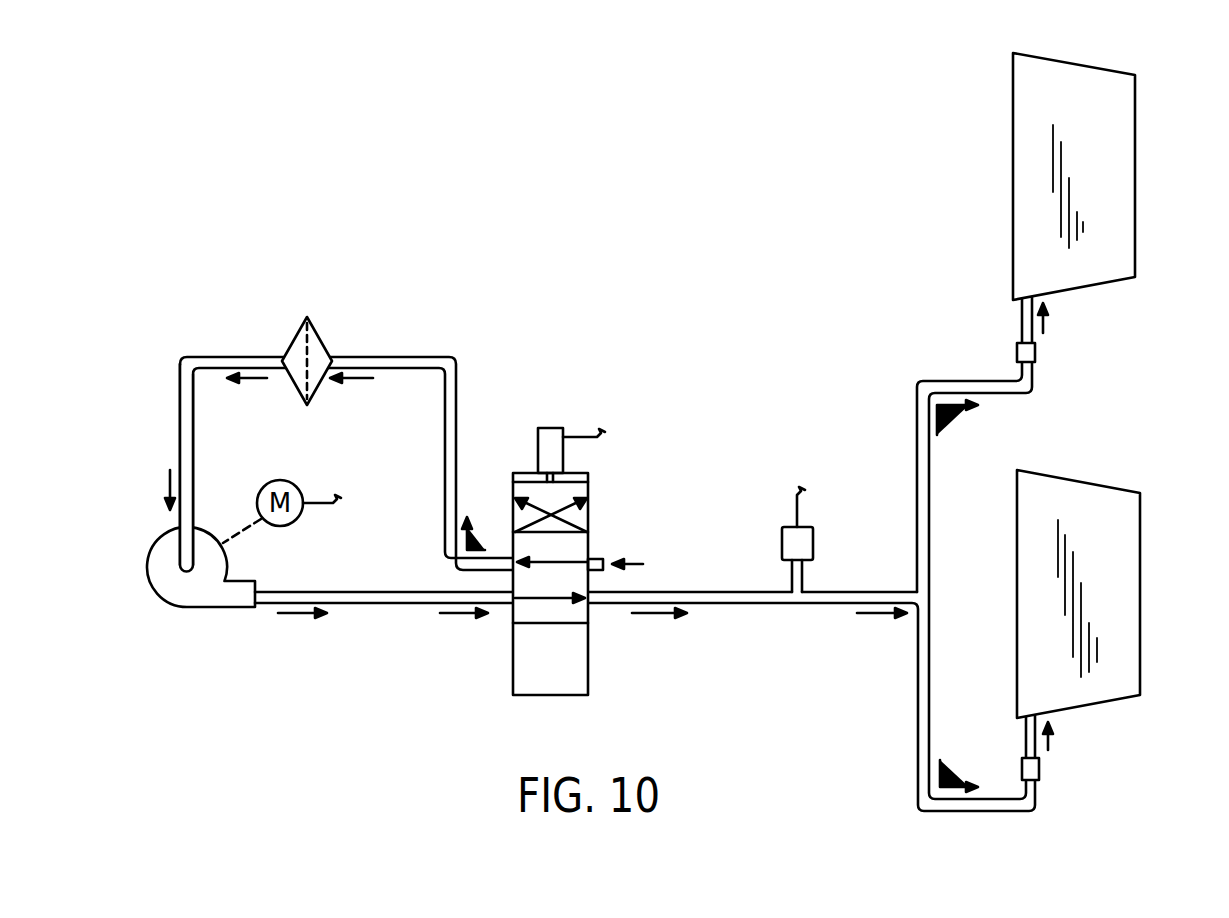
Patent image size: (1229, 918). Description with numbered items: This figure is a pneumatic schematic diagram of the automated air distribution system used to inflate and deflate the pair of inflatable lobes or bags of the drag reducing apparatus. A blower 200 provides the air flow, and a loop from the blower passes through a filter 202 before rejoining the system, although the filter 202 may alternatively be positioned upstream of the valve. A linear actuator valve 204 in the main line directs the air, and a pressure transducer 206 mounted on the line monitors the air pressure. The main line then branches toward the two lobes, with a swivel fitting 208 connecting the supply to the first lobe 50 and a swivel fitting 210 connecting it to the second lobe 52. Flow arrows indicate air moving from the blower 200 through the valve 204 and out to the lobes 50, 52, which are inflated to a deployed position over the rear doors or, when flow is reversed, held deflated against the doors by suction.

The inflatable lobe 50 is at (1145, 147).
The inflatable lobe 52 is at (1148, 553).
The blower 200 is at (185, 610).
The filter 202 is at (315, 335).
The linear actuator valve 204 is at (587, 515).
The pressure transducer 206 is at (815, 545).
The swivel fitting 208 is at (1035, 353).
The swivel fitting 210 is at (1041, 764).